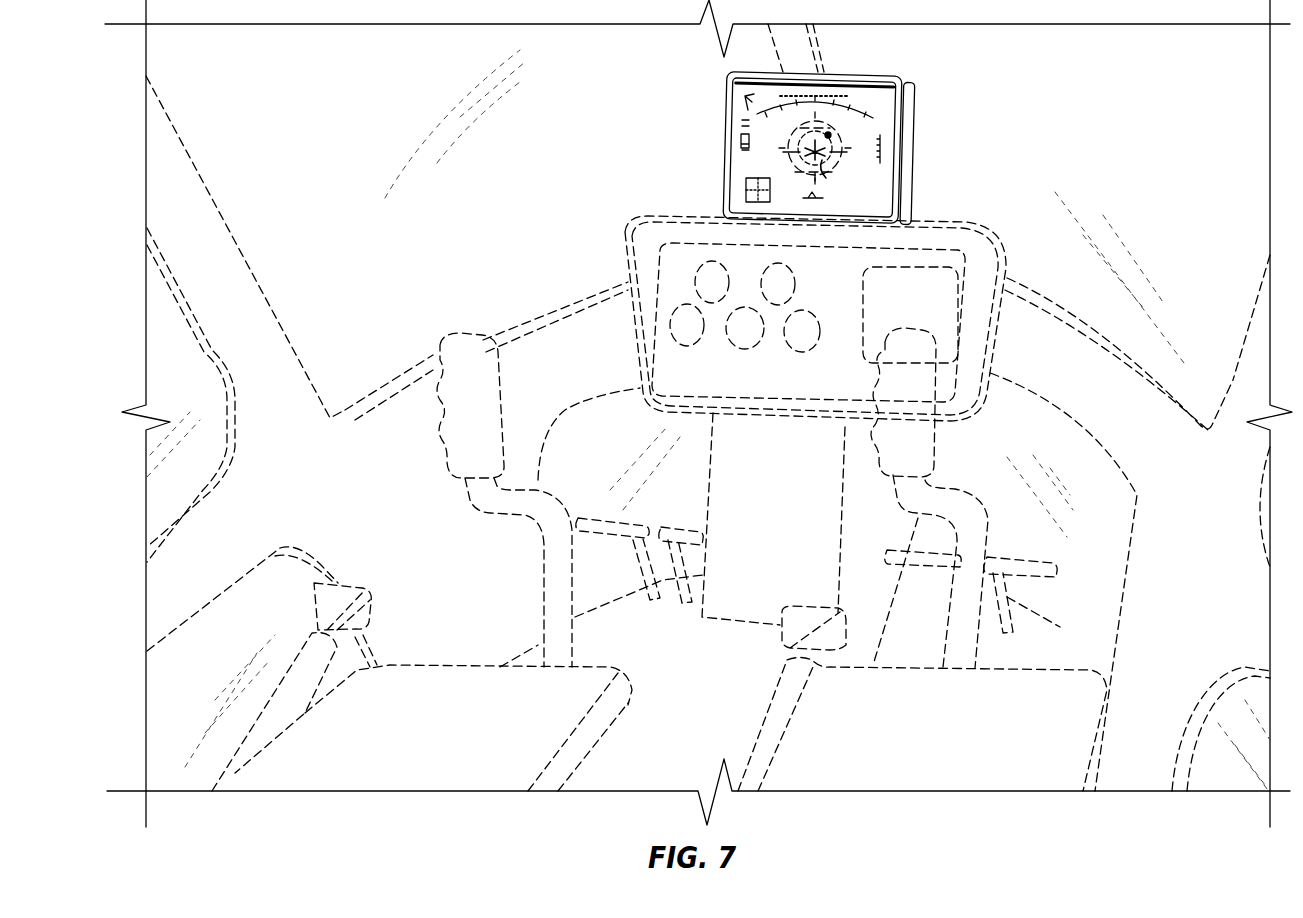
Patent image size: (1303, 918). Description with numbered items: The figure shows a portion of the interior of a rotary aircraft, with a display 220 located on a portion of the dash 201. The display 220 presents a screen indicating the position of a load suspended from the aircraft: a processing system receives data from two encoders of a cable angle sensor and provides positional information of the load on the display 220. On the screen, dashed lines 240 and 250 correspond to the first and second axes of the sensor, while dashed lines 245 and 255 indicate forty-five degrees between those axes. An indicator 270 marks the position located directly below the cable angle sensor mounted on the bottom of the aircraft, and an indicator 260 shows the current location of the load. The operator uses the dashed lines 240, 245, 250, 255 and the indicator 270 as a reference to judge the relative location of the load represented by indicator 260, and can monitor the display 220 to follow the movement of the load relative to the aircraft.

The dash 201 is at (668, 268).
The display 220 is at (880, 104).
The dashed line 240 is at (787, 147).
The dashed line 245 is at (787, 175).
The dashed line 250 is at (817, 115).
The dashed line 255 is at (793, 125).
The indicator 260 is at (843, 143).
The indicator 270 is at (823, 165).